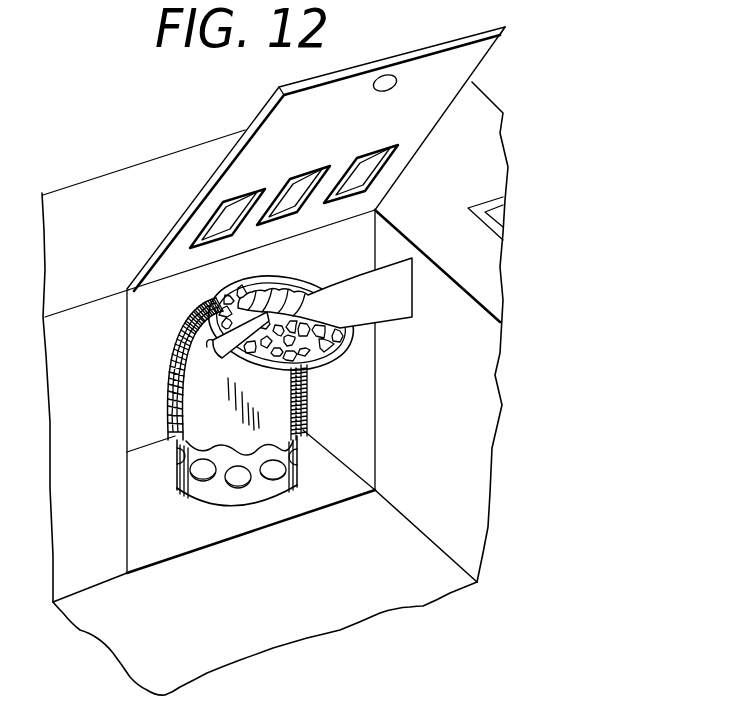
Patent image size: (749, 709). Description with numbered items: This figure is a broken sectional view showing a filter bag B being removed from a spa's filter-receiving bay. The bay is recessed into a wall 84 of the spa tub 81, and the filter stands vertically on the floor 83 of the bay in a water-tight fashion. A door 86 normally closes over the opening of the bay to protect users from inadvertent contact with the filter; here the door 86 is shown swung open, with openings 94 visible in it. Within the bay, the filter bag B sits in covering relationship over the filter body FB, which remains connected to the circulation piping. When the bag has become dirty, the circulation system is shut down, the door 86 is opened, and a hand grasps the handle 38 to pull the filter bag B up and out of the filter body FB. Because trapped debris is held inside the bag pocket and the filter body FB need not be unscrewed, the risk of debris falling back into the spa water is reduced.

The door 86 is at (463, 57).
The windows in lid 94 is at (365, 163).
The handle 38 is at (222, 336).
The filter bag B is at (303, 402).
The filter body FB is at (211, 490).
The wall 84 is at (63, 393).
The spa tub 81 is at (216, 391).
The floor 83 is at (143, 516).